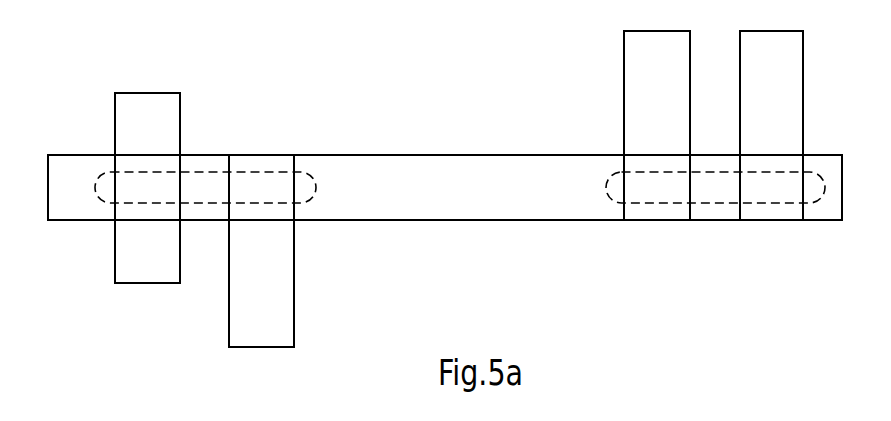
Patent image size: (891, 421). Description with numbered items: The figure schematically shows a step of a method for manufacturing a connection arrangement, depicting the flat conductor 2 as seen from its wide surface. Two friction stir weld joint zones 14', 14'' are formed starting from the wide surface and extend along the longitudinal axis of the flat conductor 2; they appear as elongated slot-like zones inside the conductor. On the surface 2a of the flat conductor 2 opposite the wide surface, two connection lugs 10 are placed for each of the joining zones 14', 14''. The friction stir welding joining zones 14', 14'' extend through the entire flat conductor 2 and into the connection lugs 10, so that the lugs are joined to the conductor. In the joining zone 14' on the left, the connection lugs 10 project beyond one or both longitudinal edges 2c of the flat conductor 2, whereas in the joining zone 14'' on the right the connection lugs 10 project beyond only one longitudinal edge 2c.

The flat conductor 2 is at (459, 128).
The surface of the flat conductor 2a is at (492, 197).
The longitudinal edge 2c is at (382, 154).
The connection lug 10 is at (147, 262).
The friction stir weld joint zone 14' is at (205, 142).
The friction stir weld joint zone 14'' is at (715, 234).